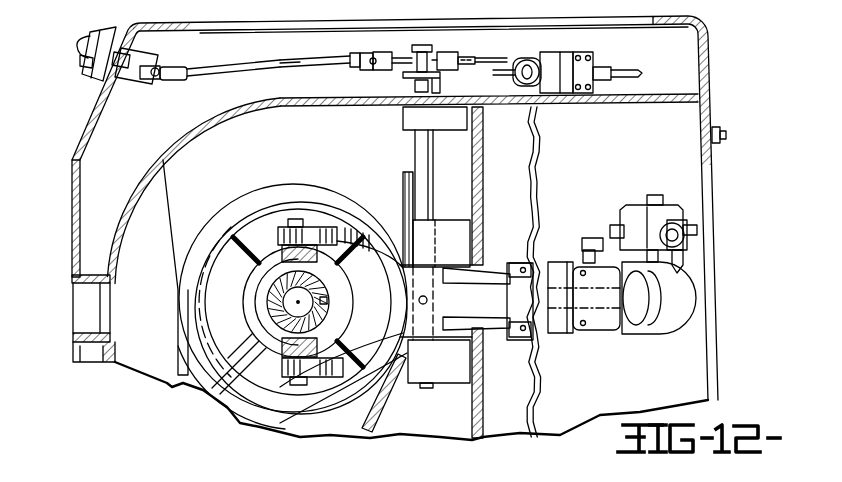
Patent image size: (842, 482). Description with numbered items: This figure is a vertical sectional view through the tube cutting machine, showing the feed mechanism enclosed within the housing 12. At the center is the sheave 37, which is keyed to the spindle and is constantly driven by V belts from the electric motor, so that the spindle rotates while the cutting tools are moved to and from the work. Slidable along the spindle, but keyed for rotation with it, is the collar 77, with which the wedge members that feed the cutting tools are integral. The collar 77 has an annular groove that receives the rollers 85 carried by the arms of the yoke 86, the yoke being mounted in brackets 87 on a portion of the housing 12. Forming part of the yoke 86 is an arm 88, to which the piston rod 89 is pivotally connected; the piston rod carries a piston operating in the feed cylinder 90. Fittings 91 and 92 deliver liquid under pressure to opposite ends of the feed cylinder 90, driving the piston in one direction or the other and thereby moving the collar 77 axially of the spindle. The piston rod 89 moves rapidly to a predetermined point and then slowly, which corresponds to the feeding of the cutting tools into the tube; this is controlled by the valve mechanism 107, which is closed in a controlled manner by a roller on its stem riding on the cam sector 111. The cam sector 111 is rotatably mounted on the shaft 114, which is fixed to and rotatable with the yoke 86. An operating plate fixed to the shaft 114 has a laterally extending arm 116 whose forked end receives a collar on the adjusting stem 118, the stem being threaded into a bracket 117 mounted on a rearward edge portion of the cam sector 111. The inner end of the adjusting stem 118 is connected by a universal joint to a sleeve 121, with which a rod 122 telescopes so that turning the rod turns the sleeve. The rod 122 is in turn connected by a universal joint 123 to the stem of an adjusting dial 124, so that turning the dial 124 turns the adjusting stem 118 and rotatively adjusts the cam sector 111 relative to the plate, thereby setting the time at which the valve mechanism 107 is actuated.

The housing 12 is at (72, 217).
The sheave 37 is at (248, 197).
The collar 77 is at (206, 389).
The rollers 85 is at (239, 420).
The yoke 86 is at (342, 371).
The brackets 87 is at (457, 232).
The arm 88 is at (493, 310).
The piston rod 89 is at (597, 333).
The feed cylinder 90 is at (638, 328).
The fitting 91 is at (592, 216).
The fitting 92 is at (683, 260).
The valve mechanism 107 is at (570, 48).
The cam sector 111 is at (532, 62).
The shaft 114 is at (414, 157).
The arm 116 is at (407, 77).
The bracket 117 is at (447, 50).
The adjusting stem 118 is at (507, 22).
The sleeve 121 is at (338, 56).
The rod 122 is at (229, 62).
The universal joint 123 is at (163, 68).
The adjusting dial 124 is at (110, 26).